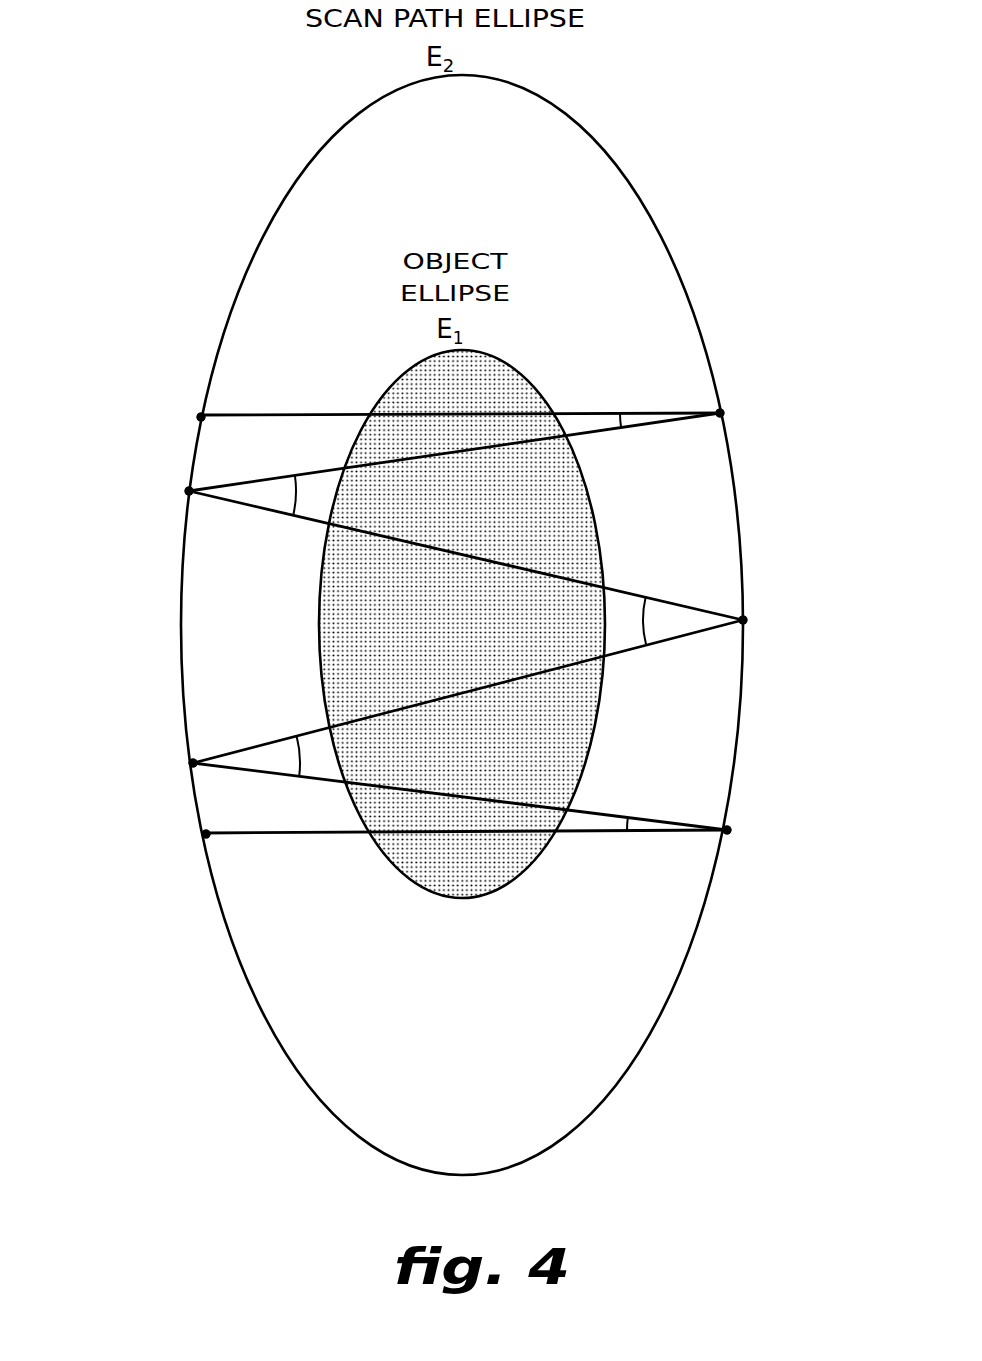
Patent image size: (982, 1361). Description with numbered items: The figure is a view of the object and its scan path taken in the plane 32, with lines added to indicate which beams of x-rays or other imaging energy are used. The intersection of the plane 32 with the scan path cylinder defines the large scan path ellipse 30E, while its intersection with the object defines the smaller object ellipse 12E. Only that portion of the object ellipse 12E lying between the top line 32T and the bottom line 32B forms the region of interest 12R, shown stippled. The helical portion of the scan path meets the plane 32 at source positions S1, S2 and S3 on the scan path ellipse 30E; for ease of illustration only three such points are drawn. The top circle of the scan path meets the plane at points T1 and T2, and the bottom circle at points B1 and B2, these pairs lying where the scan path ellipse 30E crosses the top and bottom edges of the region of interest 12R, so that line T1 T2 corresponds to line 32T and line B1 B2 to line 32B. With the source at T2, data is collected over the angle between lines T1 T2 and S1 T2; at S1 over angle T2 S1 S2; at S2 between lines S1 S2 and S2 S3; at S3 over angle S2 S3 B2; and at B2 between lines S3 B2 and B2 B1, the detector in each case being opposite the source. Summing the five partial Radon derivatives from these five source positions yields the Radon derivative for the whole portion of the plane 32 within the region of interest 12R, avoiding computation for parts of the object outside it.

The plane 32 is at (435, 478).
The top line of region of interest 32T is at (445, 413).
The bottom line of region of interest 32B is at (455, 837).
The scan path ellipse 30E is at (682, 280).
The object ellipse 12E is at (505, 360).
The region of interest 12R is at (578, 521).
The top circle intersection point T1 is at (201, 417).
The top circle intersection point T2 is at (720, 413).
The source position S1 is at (189, 491).
The source position S2 is at (743, 620).
The source position S3 is at (193, 763).
The bottom circle intersection point B1 is at (206, 834).
The bottom circle intersection point B2 is at (727, 830).